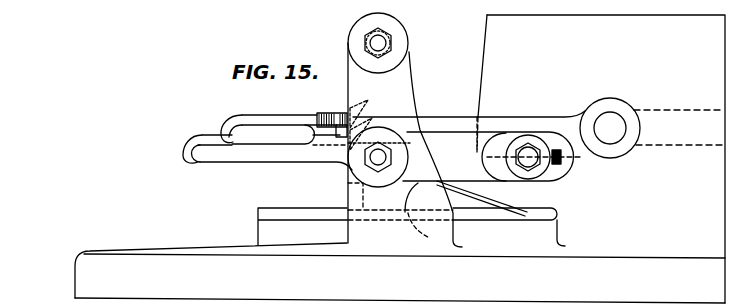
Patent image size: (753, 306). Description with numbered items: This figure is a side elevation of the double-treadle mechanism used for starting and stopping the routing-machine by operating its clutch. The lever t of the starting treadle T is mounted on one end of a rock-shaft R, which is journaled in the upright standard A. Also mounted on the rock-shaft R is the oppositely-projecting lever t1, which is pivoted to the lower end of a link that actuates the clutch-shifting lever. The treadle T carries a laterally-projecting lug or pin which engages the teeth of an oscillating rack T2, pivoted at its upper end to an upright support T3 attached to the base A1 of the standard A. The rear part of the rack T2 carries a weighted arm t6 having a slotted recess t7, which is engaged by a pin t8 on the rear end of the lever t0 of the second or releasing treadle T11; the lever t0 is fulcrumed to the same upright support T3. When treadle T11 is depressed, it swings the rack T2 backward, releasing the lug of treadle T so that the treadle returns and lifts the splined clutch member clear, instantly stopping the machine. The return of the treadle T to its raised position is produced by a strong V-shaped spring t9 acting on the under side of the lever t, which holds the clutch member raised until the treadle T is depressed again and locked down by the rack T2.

The upright standard A is at (601, 159).
The base of the upright standard A1 is at (400, 273).
The rock-shaft R is at (614, 121).
The oppositely-projecting lever t1 is at (678, 127).
The lever of the treadle T t is at (491, 140).
The pin t8 is at (560, 163).
The slotted recess t7 is at (630, 173).
The upright support T3 is at (392, 83).
The oscillating rack T2 is at (378, 198).
The weighted arm t6 is at (455, 128).
The treadle T is at (284, 119).
The treadle T11 is at (186, 150).
The lever of the second or releasing treadle t0 is at (257, 155).
The V-shaped spring t9 is at (568, 213).